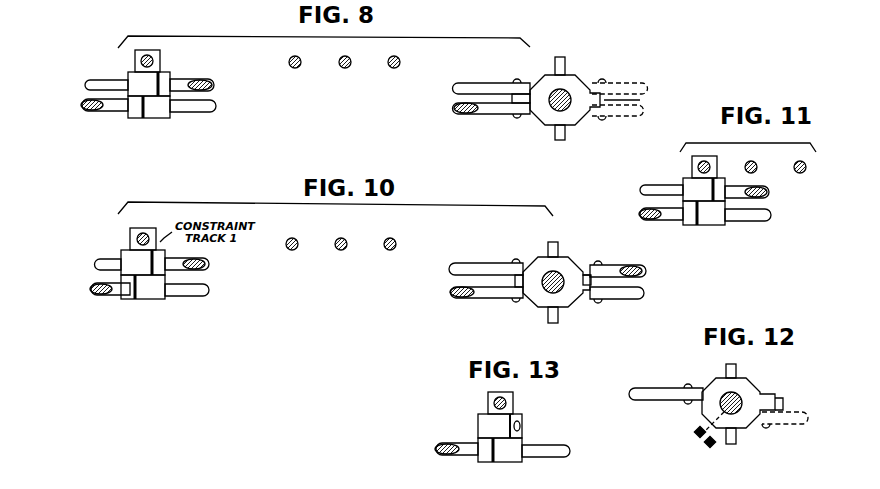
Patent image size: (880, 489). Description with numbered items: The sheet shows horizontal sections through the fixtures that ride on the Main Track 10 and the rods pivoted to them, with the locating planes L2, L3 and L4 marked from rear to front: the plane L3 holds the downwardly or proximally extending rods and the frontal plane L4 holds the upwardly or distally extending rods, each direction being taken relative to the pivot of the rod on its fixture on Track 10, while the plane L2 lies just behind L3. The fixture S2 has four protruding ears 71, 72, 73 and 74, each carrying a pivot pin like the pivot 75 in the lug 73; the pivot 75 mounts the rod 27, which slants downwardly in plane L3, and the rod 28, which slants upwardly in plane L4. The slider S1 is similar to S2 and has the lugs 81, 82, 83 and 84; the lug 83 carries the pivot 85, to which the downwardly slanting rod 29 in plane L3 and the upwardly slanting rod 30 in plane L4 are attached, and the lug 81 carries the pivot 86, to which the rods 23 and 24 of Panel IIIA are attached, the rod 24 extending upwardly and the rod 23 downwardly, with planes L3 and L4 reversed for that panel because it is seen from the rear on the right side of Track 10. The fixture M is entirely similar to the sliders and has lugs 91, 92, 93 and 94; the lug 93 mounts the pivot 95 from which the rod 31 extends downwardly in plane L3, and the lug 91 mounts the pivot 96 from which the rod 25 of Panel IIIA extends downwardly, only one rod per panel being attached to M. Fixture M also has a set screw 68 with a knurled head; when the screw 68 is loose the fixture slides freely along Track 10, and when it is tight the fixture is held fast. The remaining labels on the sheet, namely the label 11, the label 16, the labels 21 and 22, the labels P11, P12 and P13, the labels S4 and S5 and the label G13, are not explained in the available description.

In FIG. 8, the Main Track 10 is at (566, 92).
In FIG. 10, the Main Track 10 is at (560, 274).
In FIG. 12, the Main Track 10 is at (736, 396).
In FIG. 11, the pin 11 is at (800, 173).
In FIG. 8, the link end 16 is at (214, 86).
In FIG. 8, the link 21 is at (631, 118).
In FIG. 8, the link 22 is at (651, 84).
In FIG. 10, the rod 23 is at (636, 300).
In FIG. 10, the rod 24 is at (634, 268).
In FIG. 12, the rod 25 is at (784, 426).
In FIG. 8, the rod 27 is at (478, 82).
In FIG. 8, the rod 28 is at (494, 116).
In FIG. 10, the rod 29 is at (468, 268).
In FIG. 10, the rod 30 is at (476, 296).
In FIG. 12, the rod 31 is at (648, 390).
In FIG. 12, the set screw 68 is at (698, 446).
In FIG. 8, the protruding ear 71 is at (641, 100).
In FIG. 8, the protruding ear 72 is at (563, 60).
In FIG. 8, the lug 73 is at (527, 96).
In FIG. 8, the protruding ear 74 is at (558, 140).
In FIG. 8, the pivot 75 is at (520, 80).
In FIG. 10, the lug 81 is at (596, 276).
In FIG. 10, the lug 82 is at (548, 246).
In FIG. 10, the lug 83 is at (516, 280).
In FIG. 10, the lug 84 is at (547, 318).
In FIG. 10, the pivot 85 is at (514, 302).
In FIG. 8, the pivot 86 is at (602, 135).
In FIG. 10, the pivot 86 is at (598, 264).
In FIG. 12, the lug 91 is at (783, 404).
In FIG. 12, the lug 92 is at (730, 361).
In FIG. 12, the lug 93 is at (684, 404).
In FIG. 12, the lug 94 is at (731, 444).
In FIG. 12, the pivot 95 is at (688, 386).
In FIG. 12, the pivot 96 is at (766, 428).
In FIG. 8, the locating plane L2 is at (115, 58).
In FIG. 10, the locating plane L2 is at (118, 246).
In FIG. 13, the locating plane L2 is at (457, 403).
In FIG. 8, the locating plane L3 is at (88, 80).
In FIG. 11, the locating plane L3 is at (643, 190).
In FIG. 10, the locating plane L3 is at (96, 268).
In FIG. 13, the locating plane L3 is at (455, 424).
In FIG. 12, the locating plane L3 is at (628, 393).
In FIG. 8, the frontal locating plane L4 is at (80, 104).
In FIG. 11, the frontal locating plane L4 is at (643, 215).
In FIG. 10, the frontal locating plane L4 is at (90, 290).
In FIG. 13, the frontal locating plane L4 is at (438, 447).
In FIG. 8, the pivot P11 is at (395, 68).
In FIG. 10, the pivot P11 is at (391, 250).
In FIG. 8, the pivot P12 is at (346, 68).
In FIG. 11, the pivot P12 is at (755, 162).
In FIG. 10, the pivot P12 is at (342, 250).
In FIG. 8, the pivot P13 is at (296, 68).
In FIG. 11, the pivot P13 is at (709, 160).
In FIG. 10, the pivot P13 is at (293, 250).
In FIG. 10, the slider S1 is at (582, 302).
In FIG. 8, the fixture S2 is at (588, 72).
In FIG. 10, the state S4 is at (152, 298).
In FIG. 8, the state S5 is at (179, 121).
In FIG. 11, the configuration G13 is at (736, 234).
In FIG. 12, the fixture M is at (756, 382).